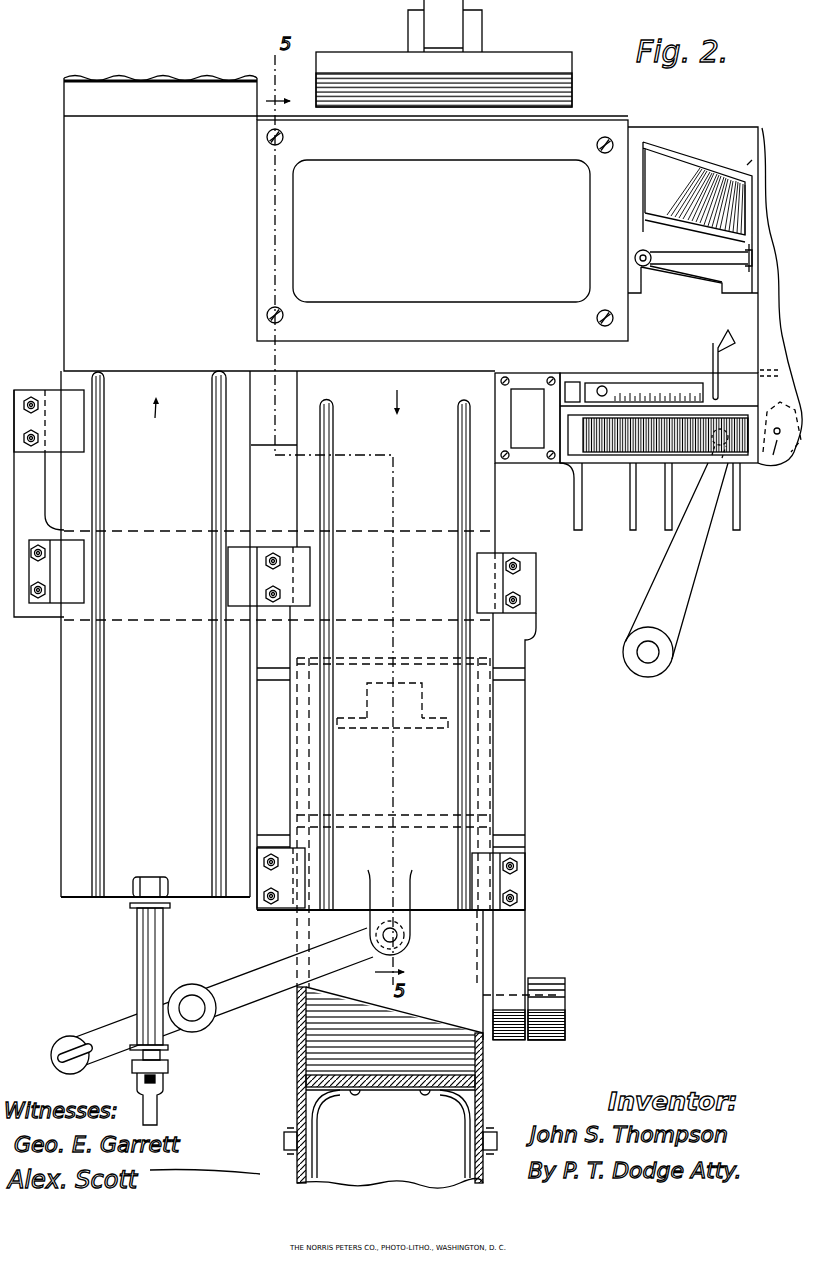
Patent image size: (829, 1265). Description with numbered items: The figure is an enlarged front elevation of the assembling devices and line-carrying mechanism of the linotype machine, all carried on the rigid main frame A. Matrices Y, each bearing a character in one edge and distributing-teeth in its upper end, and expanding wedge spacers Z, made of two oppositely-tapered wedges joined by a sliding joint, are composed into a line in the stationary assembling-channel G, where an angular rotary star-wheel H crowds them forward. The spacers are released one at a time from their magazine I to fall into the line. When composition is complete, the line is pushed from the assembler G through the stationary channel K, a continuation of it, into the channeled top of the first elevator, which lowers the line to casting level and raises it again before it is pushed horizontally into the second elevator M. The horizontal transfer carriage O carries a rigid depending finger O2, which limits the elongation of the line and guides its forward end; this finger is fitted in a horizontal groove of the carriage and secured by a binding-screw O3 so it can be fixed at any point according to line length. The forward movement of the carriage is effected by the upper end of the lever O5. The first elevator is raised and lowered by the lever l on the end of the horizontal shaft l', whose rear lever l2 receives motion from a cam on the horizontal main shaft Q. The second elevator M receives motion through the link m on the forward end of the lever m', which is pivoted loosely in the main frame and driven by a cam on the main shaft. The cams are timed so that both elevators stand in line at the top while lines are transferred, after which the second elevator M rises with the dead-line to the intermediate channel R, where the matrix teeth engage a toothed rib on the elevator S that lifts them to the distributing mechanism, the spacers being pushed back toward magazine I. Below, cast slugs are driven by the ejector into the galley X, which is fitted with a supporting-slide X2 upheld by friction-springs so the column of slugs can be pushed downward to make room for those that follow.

The main frame A is at (321, 487).
The elevator S is at (444, 53).
The intermediate channel R is at (442, 230).
The spacer magazine I is at (570, 292).
The stationary channel K is at (527, 418).
The transfer carriage O is at (659, 418).
The depending finger O2 is at (569, 388).
The binding-screw O3 is at (604, 386).
The lever O5 is at (690, 606).
The main shaft Q is at (726, 362).
The pointer mark Q' is at (757, 364).
The assembling-channel G is at (658, 452).
The matrices Y is at (600, 437).
The expanding wedge spacers Z is at (628, 521).
The star-wheel H is at (773, 455).
The second elevator M is at (314, 640).
The link m is at (163, 963).
The lever m' is at (164, 1087).
The lever l is at (370, 918).
The horizontal shaft l' is at (192, 1023).
The lever l2 is at (105, 1030).
The galley X is at (390, 1087).
The supporting-slide X2 is at (390, 1126).